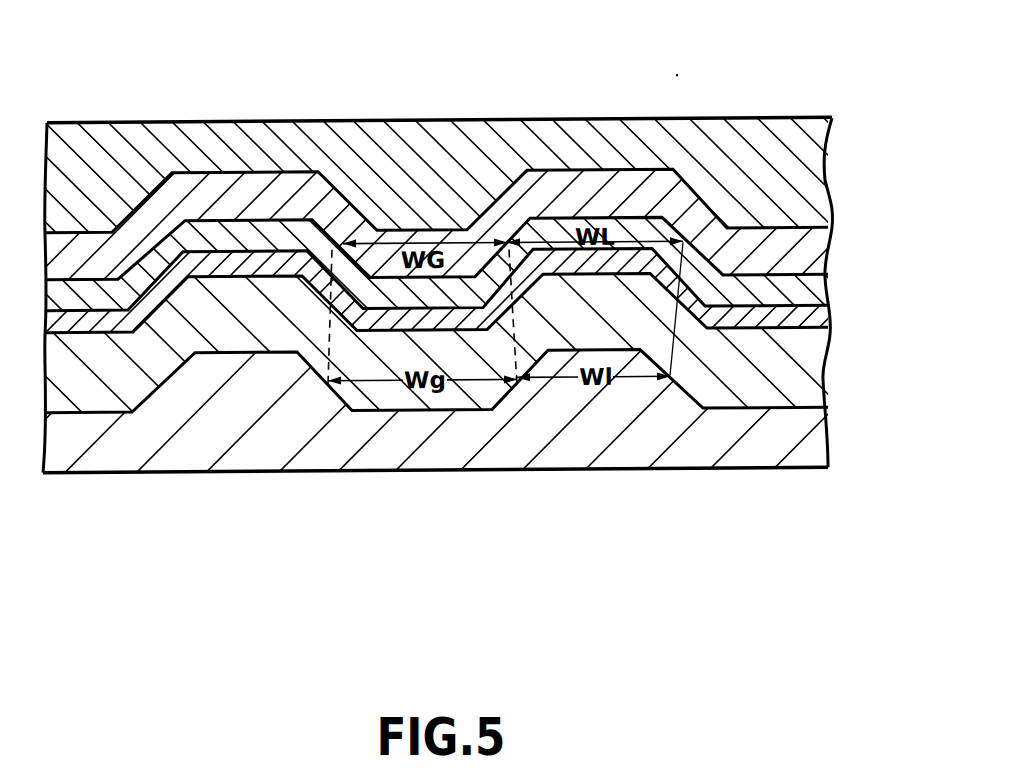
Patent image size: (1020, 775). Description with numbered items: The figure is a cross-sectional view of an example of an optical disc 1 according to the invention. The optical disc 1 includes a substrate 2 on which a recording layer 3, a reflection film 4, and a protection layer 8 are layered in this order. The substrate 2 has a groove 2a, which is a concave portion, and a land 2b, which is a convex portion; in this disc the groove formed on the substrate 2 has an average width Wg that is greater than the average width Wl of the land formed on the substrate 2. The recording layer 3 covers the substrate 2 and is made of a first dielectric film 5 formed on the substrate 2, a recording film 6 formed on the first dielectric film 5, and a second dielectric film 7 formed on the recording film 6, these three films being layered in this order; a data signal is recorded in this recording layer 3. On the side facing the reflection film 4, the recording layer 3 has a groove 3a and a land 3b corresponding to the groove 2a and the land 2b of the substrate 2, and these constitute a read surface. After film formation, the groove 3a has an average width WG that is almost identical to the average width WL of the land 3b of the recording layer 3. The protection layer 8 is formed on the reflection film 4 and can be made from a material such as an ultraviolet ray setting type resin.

The optical disc 1 is at (841, 109).
The substrate 2 is at (803, 456).
The groove 2a is at (420, 398).
The land 2b is at (623, 355).
The recording layer 3 is at (510, 282).
The groove 3a is at (400, 284).
The land 3b is at (248, 222).
The reflection film 4 is at (800, 261).
The first dielectric film 5 is at (905, 279).
The recording film 6 is at (803, 326).
The second dielectric film 7 is at (802, 299).
The protection layer 8 is at (807, 194).